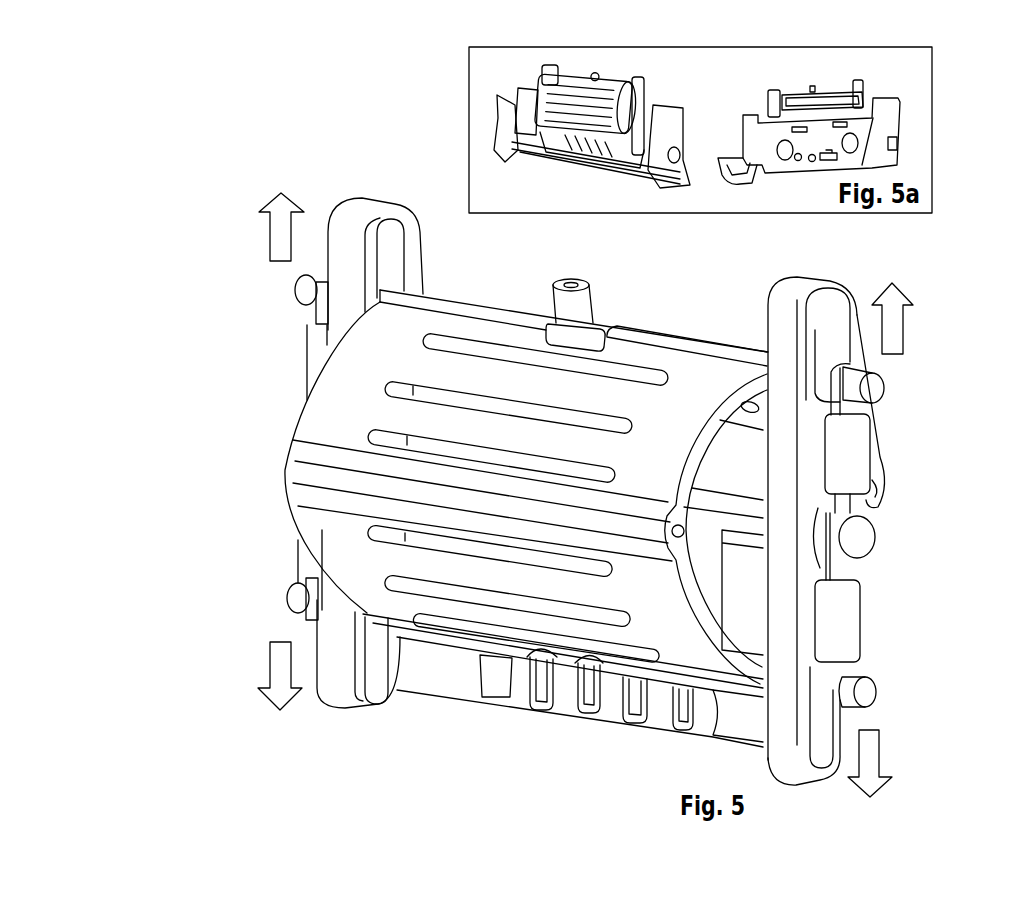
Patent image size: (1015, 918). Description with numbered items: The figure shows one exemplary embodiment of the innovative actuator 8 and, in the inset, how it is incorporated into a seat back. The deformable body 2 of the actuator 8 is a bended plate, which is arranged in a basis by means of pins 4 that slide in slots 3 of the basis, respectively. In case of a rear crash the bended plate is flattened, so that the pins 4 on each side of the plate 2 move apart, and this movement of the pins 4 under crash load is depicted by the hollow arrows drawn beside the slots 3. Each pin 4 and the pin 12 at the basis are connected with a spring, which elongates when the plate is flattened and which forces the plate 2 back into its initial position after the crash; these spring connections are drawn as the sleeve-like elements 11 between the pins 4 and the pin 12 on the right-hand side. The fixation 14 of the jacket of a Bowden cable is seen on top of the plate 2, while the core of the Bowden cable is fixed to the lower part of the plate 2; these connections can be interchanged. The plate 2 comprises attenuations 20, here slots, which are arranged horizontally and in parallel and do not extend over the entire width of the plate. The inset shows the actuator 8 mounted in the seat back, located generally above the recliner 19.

In FIG. 5, the deformable body 2 is at (348, 430).
In FIG. 5, the slots 3 is at (390, 262).
In FIG. 5, the pins 4 is at (305, 288).
In FIG. 5, the actuator 8 is at (323, 168).
In FIG. 5, the sleeve 11 is at (847, 462).
In FIG. 5, the pin 12 is at (855, 540).
In FIG. 5, the fixation of the jacket of a Bowden cable 14 is at (580, 303).
In FIG. 5A, the recliner 19 is at (506, 142).
In FIG. 5, the attenuations 20 is at (420, 540).